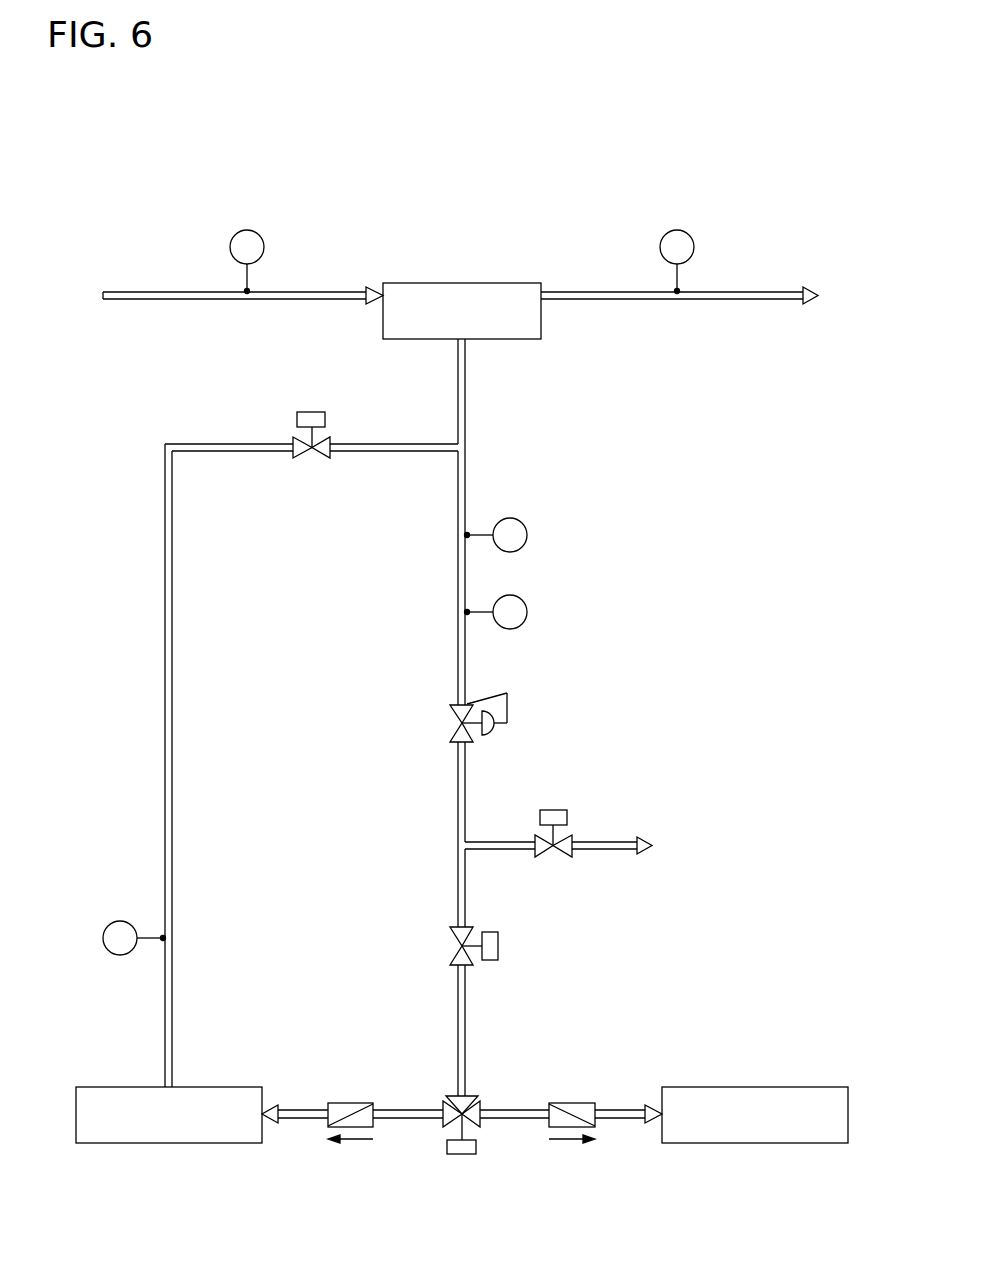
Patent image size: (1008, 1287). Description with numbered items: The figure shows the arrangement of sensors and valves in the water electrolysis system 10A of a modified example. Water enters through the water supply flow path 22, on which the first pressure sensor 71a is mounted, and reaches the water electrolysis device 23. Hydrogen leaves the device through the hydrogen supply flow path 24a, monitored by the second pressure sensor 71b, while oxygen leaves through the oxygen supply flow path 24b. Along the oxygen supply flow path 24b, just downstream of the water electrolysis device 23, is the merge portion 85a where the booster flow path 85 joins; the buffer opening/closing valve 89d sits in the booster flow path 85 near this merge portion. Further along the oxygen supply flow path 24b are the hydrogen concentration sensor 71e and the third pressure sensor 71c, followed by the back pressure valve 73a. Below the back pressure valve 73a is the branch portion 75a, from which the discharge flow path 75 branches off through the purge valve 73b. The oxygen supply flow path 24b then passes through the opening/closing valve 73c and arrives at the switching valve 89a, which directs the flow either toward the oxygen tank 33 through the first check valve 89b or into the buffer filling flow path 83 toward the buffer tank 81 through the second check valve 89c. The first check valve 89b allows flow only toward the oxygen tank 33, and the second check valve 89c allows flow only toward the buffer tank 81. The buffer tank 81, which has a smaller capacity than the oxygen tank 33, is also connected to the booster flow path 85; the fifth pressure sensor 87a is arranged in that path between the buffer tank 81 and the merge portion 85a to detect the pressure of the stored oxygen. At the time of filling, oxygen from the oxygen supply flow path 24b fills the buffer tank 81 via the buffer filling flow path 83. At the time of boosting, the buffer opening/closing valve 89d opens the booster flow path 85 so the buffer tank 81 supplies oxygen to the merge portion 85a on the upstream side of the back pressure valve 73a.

The water electrolysis system 10A is at (802, 156).
The water supply flow path 22 is at (126, 291).
The first pressure sensor 71a is at (256, 231).
The water electrolysis device 23 is at (520, 282).
The hydrogen supply flow path 24a is at (775, 291).
The second pressure sensor 71b is at (686, 231).
The oxygen supply flow path 24b is at (467, 400).
The merge portion 85a is at (456, 443).
The booster flow path 85 is at (164, 610).
The buffer opening/closing valve 89d is at (311, 411).
The hydrogen concentration sensor 71e is at (524, 523).
The third pressure sensor 71c is at (524, 600).
The back pressure valve 73a is at (508, 693).
The branch portion 75a is at (469, 841).
The purge valve 73b is at (557, 809).
The discharge flow path 75 is at (608, 841).
The opening/closing valve 73c is at (490, 931).
The fifth pressure sensor 87a is at (118, 921).
The buffer tank 81 is at (205, 1086).
The buffer filling flow path 83 is at (297, 1109).
The second check valve 89c is at (371, 1102).
The switching valve 89a is at (467, 1094).
The first check valve 89b is at (578, 1102).
The oxygen tank 33 is at (812, 1086).